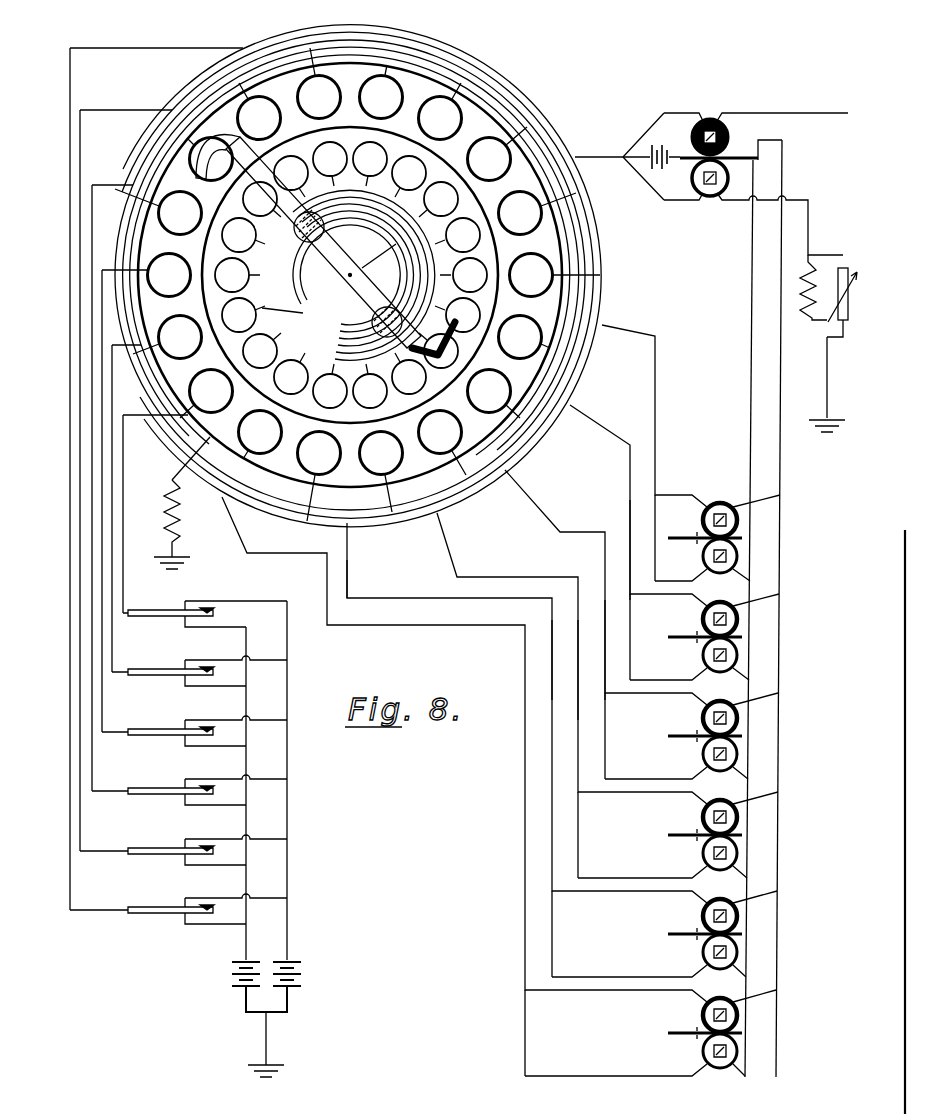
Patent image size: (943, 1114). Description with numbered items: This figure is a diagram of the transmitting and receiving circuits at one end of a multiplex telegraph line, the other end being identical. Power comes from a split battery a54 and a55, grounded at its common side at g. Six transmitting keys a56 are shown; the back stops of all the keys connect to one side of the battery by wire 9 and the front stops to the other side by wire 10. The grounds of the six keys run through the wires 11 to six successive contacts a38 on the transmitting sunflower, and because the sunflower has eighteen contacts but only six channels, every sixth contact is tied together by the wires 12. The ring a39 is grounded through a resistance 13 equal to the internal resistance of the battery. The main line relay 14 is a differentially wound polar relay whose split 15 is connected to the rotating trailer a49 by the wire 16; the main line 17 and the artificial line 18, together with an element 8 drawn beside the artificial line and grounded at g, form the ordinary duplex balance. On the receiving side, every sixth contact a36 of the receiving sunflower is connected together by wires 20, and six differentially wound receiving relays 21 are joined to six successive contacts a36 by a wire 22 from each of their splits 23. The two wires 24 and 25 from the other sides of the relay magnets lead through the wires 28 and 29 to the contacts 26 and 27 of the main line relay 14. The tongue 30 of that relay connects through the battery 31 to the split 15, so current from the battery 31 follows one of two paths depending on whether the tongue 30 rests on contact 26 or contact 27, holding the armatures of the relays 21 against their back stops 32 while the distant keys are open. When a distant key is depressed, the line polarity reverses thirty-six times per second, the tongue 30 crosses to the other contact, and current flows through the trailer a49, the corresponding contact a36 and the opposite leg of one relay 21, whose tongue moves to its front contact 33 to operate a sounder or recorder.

The wires 12 is at (456, 48).
The contacts a38 is at (211, 391).
The contacts a36 is at (266, 353).
The wires 20 is at (425, 231).
The trailer a49 is at (362, 300).
The wires 11 is at (114, 488).
The ring a39 is at (240, 455).
The resistance 13 is at (178, 516).
The transmitting keys a56 is at (176, 610).
The wire 9 is at (288, 918).
The wire 10 is at (246, 940).
The battery a54 is at (230, 976).
The battery a55 is at (304, 980).
The ground g is at (282, 1068).
The wire 16 is at (612, 143).
The split 15 is at (628, 165).
The battery 31 is at (662, 143).
The main line relay 14 is at (712, 118).
The main line 17 is at (840, 113).
The contact 26 is at (756, 170).
The tongue 30 is at (742, 155).
The contact 27 is at (760, 153).
The resistance 8 is at (808, 330).
The artificial line 18 is at (847, 266).
The wire 28 is at (750, 412).
The wire 29 is at (780, 462).
The splits 23 is at (657, 495).
The wire 24 is at (733, 510).
The wire 25 is at (745, 572).
The receiving relays 21 is at (703, 556).
The front contact 33 is at (697, 532).
The back stops 32 is at (697, 544).
The wire 22 is at (523, 697).